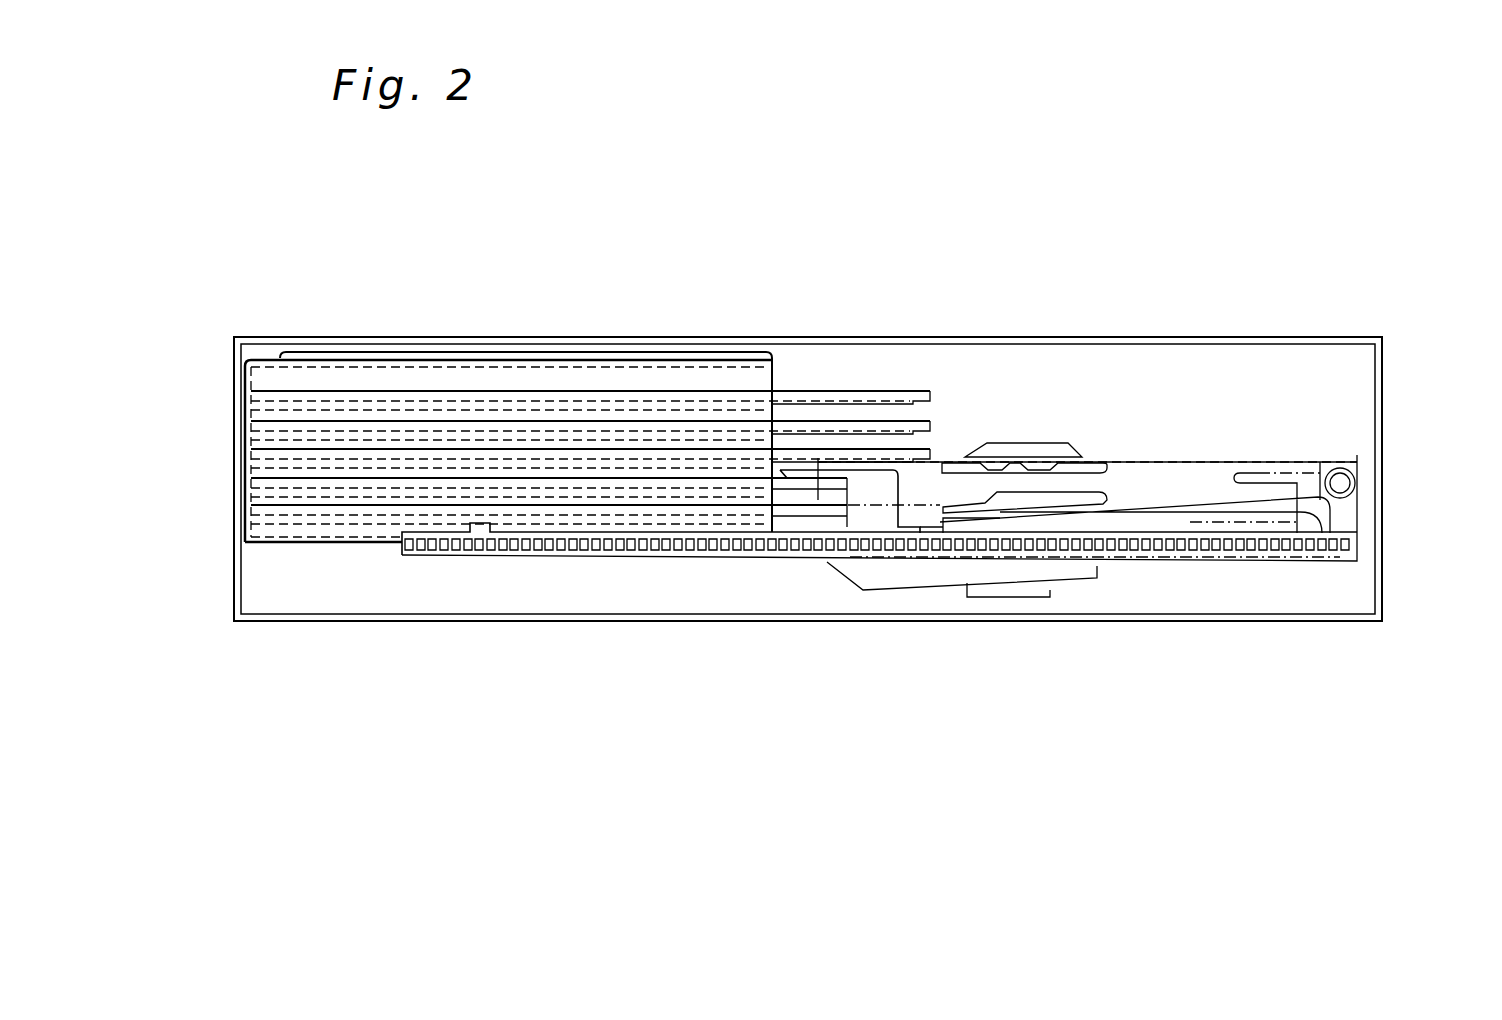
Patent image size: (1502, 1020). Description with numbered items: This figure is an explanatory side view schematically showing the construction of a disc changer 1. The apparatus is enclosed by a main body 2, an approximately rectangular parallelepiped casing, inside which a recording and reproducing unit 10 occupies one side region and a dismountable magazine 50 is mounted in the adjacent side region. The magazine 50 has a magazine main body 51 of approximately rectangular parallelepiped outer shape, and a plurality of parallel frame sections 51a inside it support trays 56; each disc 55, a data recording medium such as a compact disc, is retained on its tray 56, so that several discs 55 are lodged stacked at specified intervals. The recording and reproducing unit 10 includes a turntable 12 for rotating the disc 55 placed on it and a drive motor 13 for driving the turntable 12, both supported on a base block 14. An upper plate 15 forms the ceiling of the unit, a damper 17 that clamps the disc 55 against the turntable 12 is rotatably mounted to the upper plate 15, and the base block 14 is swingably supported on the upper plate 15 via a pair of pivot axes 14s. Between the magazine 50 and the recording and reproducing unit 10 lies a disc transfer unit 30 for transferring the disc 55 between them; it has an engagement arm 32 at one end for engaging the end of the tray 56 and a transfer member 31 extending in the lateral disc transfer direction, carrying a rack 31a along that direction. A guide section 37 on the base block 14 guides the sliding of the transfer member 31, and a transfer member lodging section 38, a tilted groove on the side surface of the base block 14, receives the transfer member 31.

The disc changer 1 is at (863, 406).
The main body 2 is at (1386, 358).
The recording and reproducing unit 10 is at (997, 415).
The turntable 12 is at (1112, 506).
The drive motor 13 is at (1075, 600).
The base block 14 is at (955, 583).
The pivot axes 14s is at (1347, 483).
The upper plate 15 is at (1110, 453).
The damper 17 is at (1108, 492).
The disc transfer unit 30 is at (700, 560).
The transfer member 31 is at (592, 558).
The rack 31a is at (565, 552).
The engagement arm 32 is at (862, 520).
The guide section 37 is at (897, 563).
The transfer member lodging section 38 is at (1115, 562).
The magazine 50 is at (596, 342).
The magazine main body 51 is at (336, 349).
The frame sections 51a is at (627, 518).
The disc 55 is at (253, 395).
The tray 56 is at (505, 512).